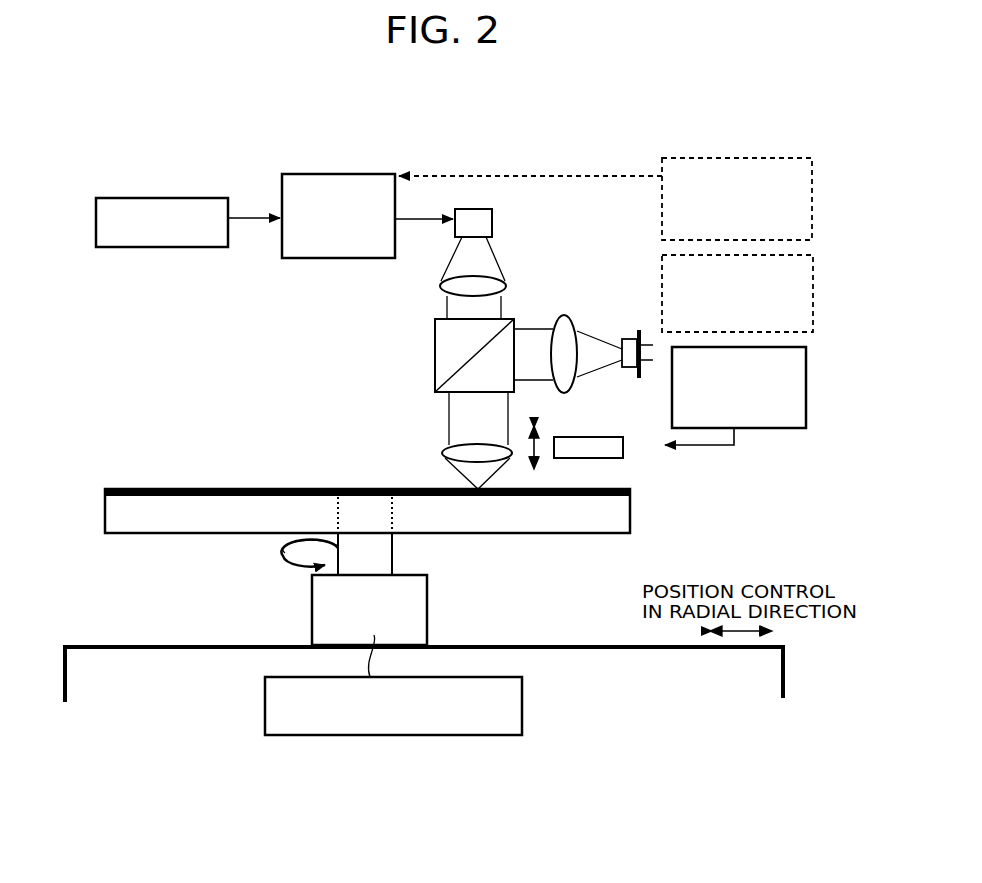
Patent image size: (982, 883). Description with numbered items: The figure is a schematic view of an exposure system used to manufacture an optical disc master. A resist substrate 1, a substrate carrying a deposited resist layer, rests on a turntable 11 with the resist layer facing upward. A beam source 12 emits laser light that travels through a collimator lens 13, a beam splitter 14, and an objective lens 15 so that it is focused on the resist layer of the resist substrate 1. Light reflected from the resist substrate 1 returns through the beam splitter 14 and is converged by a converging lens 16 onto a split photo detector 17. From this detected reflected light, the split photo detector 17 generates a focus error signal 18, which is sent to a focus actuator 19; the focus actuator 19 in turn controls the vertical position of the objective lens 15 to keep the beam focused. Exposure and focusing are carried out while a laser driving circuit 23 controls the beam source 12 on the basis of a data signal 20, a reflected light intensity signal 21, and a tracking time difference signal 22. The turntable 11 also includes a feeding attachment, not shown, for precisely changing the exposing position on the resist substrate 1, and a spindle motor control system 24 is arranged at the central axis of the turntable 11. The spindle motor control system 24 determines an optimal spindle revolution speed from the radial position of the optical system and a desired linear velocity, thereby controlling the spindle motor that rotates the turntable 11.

The resist substrate 1 is at (106, 490).
The turntable 11 is at (115, 513).
The beam source 12 is at (480, 228).
The collimator lens 13 is at (492, 290).
The beam splitter 14 is at (435, 336).
The objective lens 15 is at (445, 456).
The converging lens 16 is at (570, 385).
The split photo detector 17 is at (628, 340).
The focus error signal 18 is at (806, 381).
The focus actuator 19 is at (603, 450).
The data signal 20 is at (162, 198).
The reflected light intensity signal 21 is at (812, 197).
The tracking time difference signal 22 is at (813, 294).
The laser driving circuit 23 is at (342, 174).
The spindle motor control system 24 is at (522, 701).